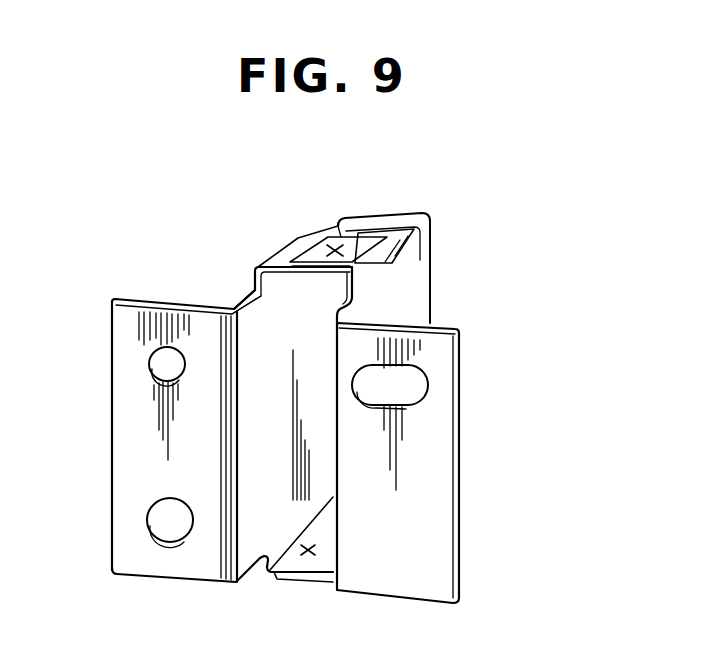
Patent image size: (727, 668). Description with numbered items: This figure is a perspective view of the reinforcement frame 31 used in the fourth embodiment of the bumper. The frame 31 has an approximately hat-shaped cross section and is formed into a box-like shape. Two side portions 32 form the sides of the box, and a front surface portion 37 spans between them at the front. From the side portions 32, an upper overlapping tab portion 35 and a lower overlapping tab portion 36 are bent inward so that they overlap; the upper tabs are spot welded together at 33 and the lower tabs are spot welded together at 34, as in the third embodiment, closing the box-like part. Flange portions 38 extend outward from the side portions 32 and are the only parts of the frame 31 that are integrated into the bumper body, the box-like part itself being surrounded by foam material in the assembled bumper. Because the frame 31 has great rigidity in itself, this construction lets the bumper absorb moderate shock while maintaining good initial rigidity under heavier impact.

The frame 31 is at (440, 247).
The side portions 32 is at (408, 298).
The spot weld 33 is at (331, 246).
The spot weld 34 is at (306, 556).
The upper overlapping tab portion 35 is at (268, 247).
The lower overlapping tab portion 36 is at (319, 594).
The front surface portion 37 is at (387, 237).
The flange portions 38 is at (135, 462).